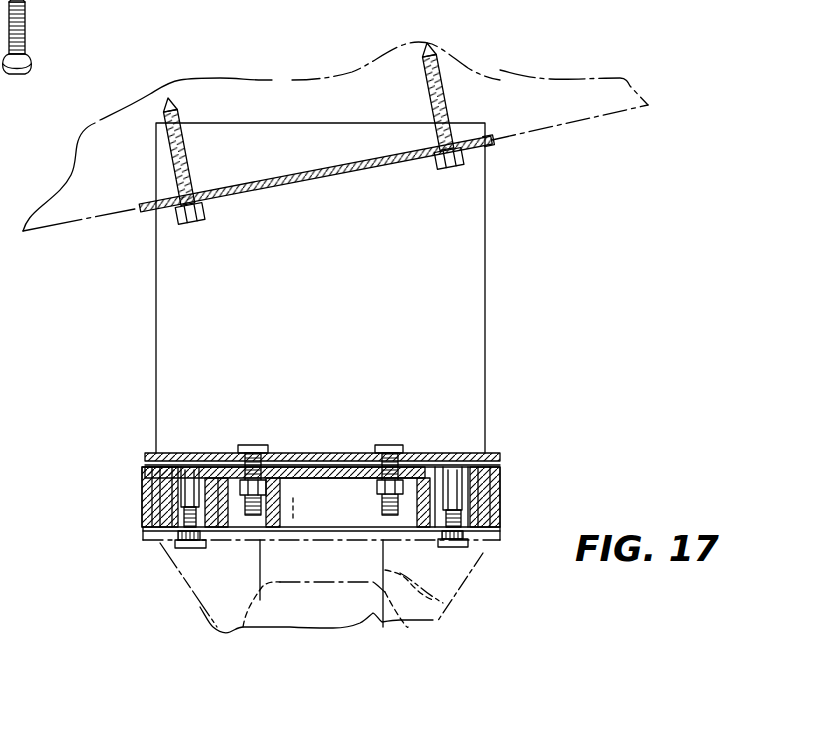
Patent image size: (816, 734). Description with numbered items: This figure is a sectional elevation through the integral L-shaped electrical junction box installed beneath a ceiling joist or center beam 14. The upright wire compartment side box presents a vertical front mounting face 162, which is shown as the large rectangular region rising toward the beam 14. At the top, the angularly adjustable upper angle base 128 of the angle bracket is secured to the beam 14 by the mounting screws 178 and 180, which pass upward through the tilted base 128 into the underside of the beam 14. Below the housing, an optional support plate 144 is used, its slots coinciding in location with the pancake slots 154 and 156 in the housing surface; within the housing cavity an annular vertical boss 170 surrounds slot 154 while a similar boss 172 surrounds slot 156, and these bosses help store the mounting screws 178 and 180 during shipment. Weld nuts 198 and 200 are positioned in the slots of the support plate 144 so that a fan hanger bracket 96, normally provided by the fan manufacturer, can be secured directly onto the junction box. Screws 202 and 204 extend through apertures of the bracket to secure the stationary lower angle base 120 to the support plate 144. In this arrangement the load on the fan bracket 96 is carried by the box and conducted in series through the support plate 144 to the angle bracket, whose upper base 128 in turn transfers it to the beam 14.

The joist or center beam 14 is at (549, 89).
The hanger bracket 96 is at (440, 598).
The lower angle base 120 is at (352, 452).
The upper angle base 128 is at (316, 183).
The support plate 144 is at (286, 460).
The slot 154 is at (207, 517).
The slot 156 is at (468, 517).
The vertical front mounting face 162 is at (345, 304).
The annular vertical boss 170 is at (142, 513).
The annular vertical boss 172 is at (501, 506).
The mounting screw 178 is at (191, 167).
The mounting screw 180 is at (428, 99).
The weld nut 198 is at (189, 458).
The weld nut 200 is at (457, 453).
The screw 202 is at (266, 540).
The screw 204 is at (387, 507).